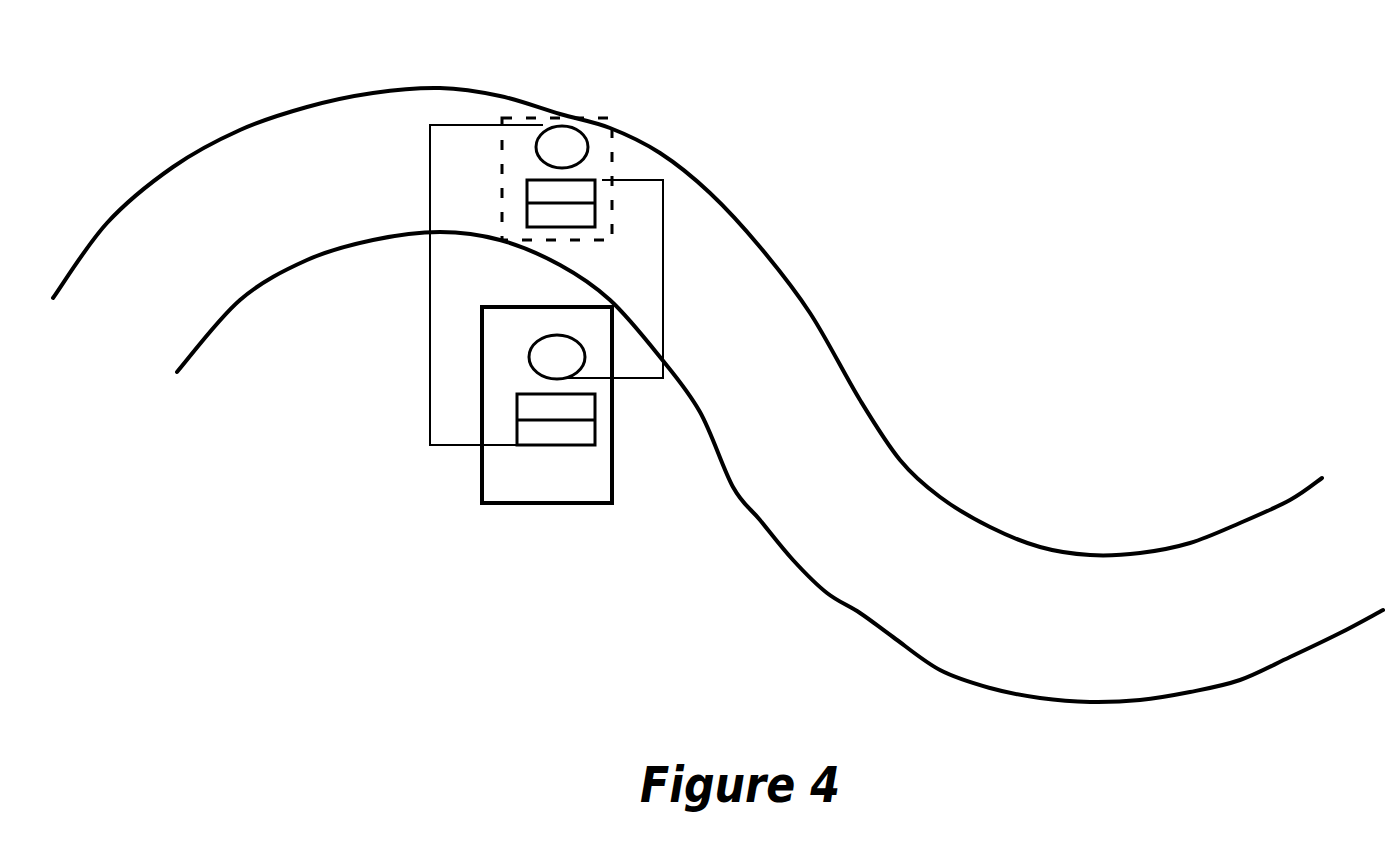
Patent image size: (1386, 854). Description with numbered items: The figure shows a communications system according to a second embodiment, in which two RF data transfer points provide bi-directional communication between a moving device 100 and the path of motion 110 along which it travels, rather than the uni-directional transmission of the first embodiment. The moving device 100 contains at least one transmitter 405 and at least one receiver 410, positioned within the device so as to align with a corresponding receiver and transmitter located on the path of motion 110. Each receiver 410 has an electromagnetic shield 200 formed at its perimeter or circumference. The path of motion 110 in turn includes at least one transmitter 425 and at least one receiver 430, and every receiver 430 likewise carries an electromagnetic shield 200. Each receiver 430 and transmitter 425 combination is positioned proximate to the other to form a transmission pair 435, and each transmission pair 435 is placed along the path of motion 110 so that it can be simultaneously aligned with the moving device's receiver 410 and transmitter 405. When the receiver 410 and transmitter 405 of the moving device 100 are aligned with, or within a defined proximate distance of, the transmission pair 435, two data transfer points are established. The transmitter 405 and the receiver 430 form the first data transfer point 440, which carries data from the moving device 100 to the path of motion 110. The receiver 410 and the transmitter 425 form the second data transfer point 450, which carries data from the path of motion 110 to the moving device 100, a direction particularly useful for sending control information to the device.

The moving device 100 is at (548, 514).
The path of motion 110 is at (985, 520).
The electromagnetic shield 200 is at (557, 315).
The transmitter 405 is at (547, 330).
The receiver 410 is at (560, 447).
The transmitter 425 is at (594, 128).
The receiver 430 is at (531, 175).
The transmission pair 435 is at (520, 117).
The first data transfer point 440 is at (663, 278).
The second data transfer point 450 is at (428, 318).